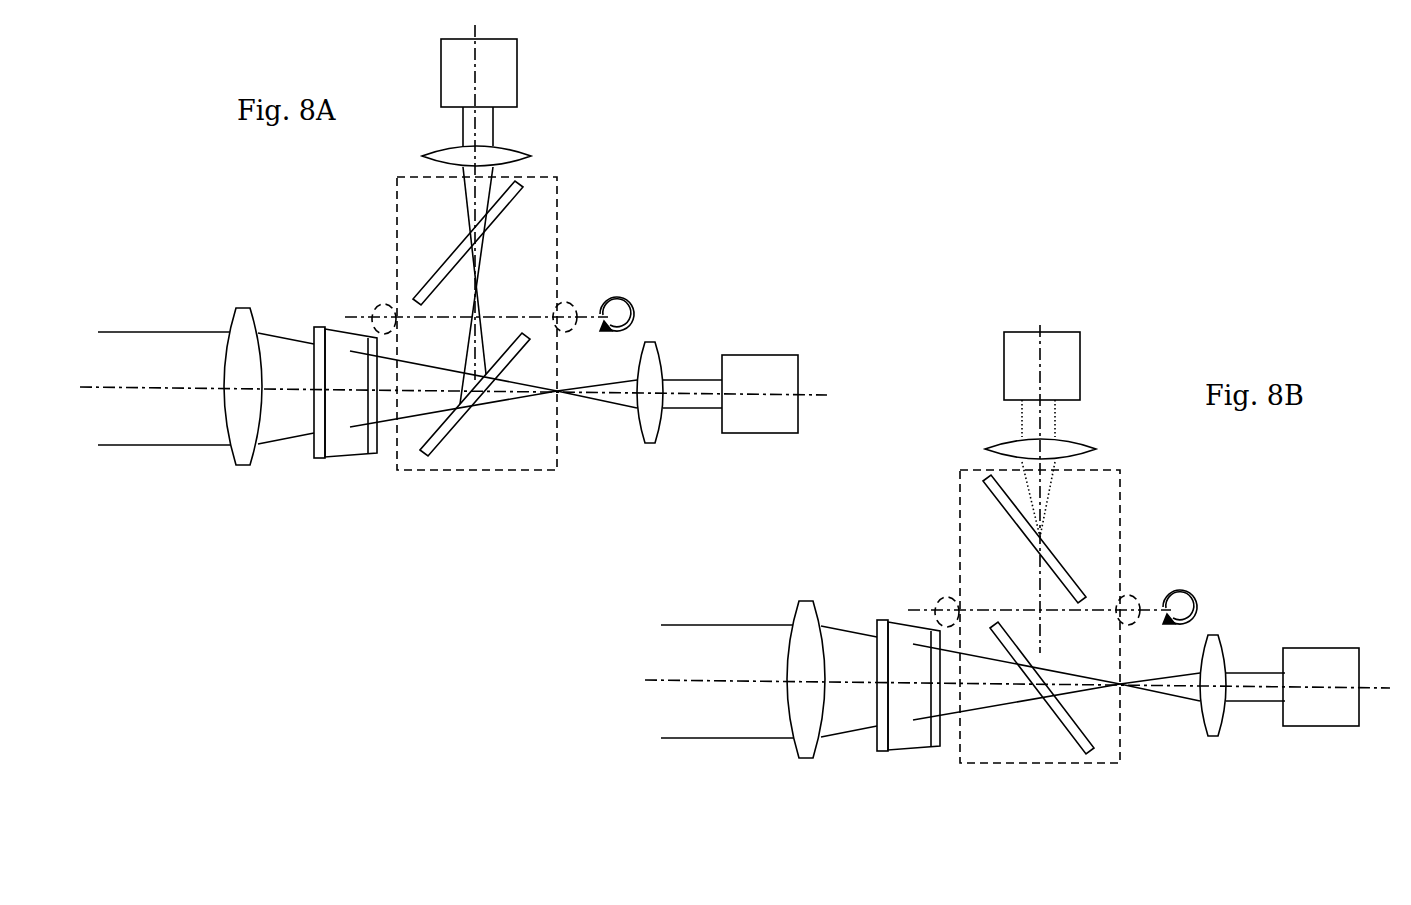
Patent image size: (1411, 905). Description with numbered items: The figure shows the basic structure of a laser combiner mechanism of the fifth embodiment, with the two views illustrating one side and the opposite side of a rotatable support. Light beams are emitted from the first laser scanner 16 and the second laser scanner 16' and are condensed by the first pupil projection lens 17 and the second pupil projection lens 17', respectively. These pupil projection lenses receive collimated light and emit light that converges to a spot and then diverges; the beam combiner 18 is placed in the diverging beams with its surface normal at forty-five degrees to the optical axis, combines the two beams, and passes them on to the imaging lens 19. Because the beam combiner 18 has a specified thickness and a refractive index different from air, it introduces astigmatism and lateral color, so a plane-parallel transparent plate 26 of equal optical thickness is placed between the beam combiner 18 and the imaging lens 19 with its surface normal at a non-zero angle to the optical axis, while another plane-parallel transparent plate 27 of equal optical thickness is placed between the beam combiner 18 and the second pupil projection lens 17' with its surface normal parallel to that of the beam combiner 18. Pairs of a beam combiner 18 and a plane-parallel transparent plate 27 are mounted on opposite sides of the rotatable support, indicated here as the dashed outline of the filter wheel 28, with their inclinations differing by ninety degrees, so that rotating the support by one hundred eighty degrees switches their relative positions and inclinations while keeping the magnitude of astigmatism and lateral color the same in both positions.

In FIG. 8A, the first laser scanner 16 is at (760, 434).
In FIG. 8B, the first laser scanner 16 is at (1321, 729).
In FIG. 8A, the first pupil projection lens 17 is at (650, 436).
In FIG. 8B, the first pupil projection lens 17 is at (1211, 734).
In FIG. 8A, the second laser scanner 16' is at (520, 70).
In FIG. 8B, the second laser scanner 16' is at (1082, 364).
In FIG. 8A, the second pupil projection lens 17' is at (516, 137).
In FIG. 8B, the second pupil projection lens 17' is at (1079, 431).
In FIG. 8A, the beam combiner 18 is at (443, 450).
In FIG. 8B, the beam combiner 18 is at (985, 505).
In FIG. 8A, the imaging lens 19 is at (243, 465).
In FIG. 8B, the imaging lens 19 is at (807, 758).
In FIG. 8A, the plane-parallel transparent plate 26 is at (330, 458).
In FIG. 8B, the plane-parallel transparent plate 26 is at (893, 753).
In FIG. 8A, the plane-parallel transparent plate 27 is at (510, 210).
In FIG. 8B, the plane-parallel transparent plate 27 is at (1068, 740).
In FIG. 8A, the filter wheel 28 is at (397, 220).
In FIG. 8B, the filter wheel 28 is at (1120, 517).